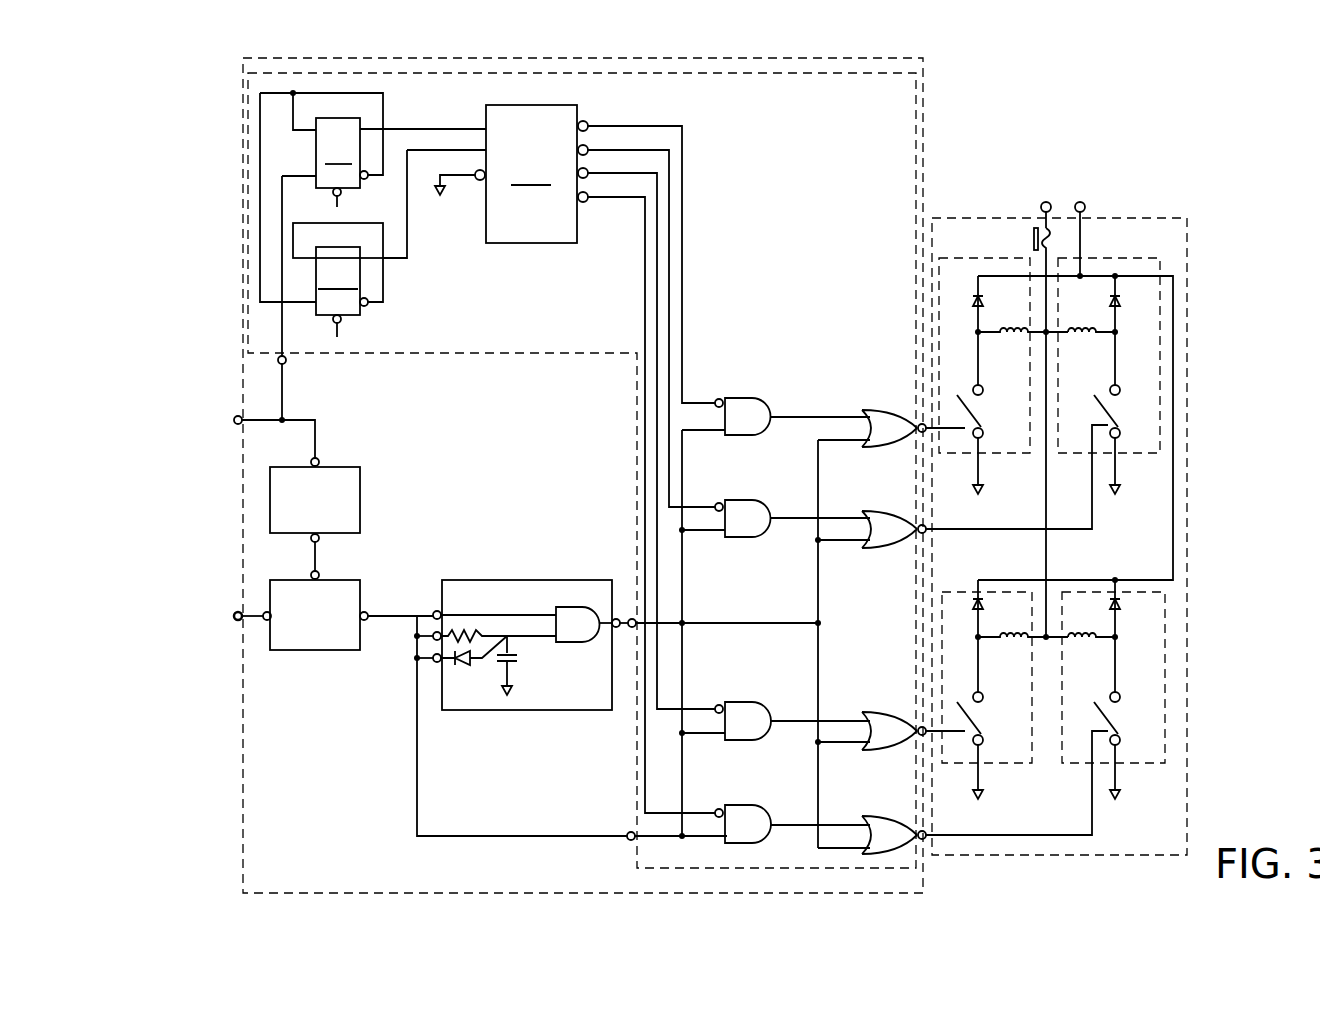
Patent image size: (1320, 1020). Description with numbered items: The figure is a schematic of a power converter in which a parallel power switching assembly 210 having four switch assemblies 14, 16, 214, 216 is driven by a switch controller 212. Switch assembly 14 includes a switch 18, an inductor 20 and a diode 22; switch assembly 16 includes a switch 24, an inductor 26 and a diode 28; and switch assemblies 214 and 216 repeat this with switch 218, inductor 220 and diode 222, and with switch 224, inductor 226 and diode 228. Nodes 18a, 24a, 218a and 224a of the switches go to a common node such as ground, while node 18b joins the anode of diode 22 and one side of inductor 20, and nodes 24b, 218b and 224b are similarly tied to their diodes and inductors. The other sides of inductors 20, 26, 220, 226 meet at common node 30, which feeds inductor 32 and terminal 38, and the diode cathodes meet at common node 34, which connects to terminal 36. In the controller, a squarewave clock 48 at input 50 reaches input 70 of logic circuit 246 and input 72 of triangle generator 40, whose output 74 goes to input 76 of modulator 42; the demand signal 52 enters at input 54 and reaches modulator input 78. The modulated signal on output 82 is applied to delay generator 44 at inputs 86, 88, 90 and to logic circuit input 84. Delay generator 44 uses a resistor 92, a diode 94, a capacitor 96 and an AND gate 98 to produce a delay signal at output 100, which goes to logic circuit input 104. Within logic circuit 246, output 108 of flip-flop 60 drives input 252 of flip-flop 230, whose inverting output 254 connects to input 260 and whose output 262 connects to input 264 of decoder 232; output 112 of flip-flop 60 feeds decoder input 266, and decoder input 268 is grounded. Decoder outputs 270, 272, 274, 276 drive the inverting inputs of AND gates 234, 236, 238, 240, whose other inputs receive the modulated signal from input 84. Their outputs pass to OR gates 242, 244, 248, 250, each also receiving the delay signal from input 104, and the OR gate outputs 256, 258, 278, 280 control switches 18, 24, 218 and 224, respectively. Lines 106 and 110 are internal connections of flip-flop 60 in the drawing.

The switch assembly 14 is at (928, 297).
The switch assembly 16 is at (1162, 333).
The switch 18 is at (970, 411).
The node 18a is at (984, 434).
The node 18b is at (972, 388).
The inductor 20 is at (1012, 336).
The diode 22 is at (984, 301).
The switch 24 is at (1119, 418).
The node 24a is at (1120, 434).
The node 24b is at (1120, 388).
The inductor 26 is at (1078, 330).
The diode 28 is at (1120, 302).
The common node 30 is at (1049, 334).
The inductor 32 is at (1043, 230).
The common node 34 is at (1082, 274).
The terminal 36 is at (1080, 202).
The terminal 38 is at (1046, 202).
The triangle generator 40 is at (350, 480).
The modulator 42 is at (310, 634).
The delay generator 44 is at (530, 580).
The squarewave clock 48 is at (160, 408).
The input 50 is at (238, 424).
The demand signal 52 is at (177, 665).
The input 54 is at (236, 612).
The flip-flop 60 is at (338, 162).
The input 70 is at (286, 362).
The input 72 is at (316, 458).
The output 74 is at (319, 540).
The input 76 is at (319, 576).
The input 78 is at (267, 620).
The output 82 is at (366, 620).
The input 84 is at (630, 832).
The input 86 is at (437, 611).
The input 88 is at (433, 638).
The input 90 is at (437, 662).
The resistor 92 is at (470, 632).
The diode 94 is at (465, 660).
The capacitor 96 is at (518, 660).
The AND gate 98 is at (578, 608).
The output 100 is at (616, 619).
The input 104 is at (632, 627).
The counter input line 106 is at (282, 178).
The output 108 is at (367, 180).
The feedback line 110 is at (302, 132).
The output 112 is at (375, 129).
The parallel power switching assembly 210 is at (1186, 218).
The switch controller 212 is at (928, 65).
The switch assembly 214 is at (928, 632).
The switch assembly 216 is at (1165, 625).
The switch 218 is at (970, 714).
The node 218a is at (984, 741).
The node 218b is at (983, 696).
The inductor 220 is at (1012, 634).
The diode 222 is at (975, 601).
The switch 224 is at (1119, 721).
The node 224a is at (1121, 740).
The node 224b is at (1120, 695).
The inductor 226 is at (1080, 634).
The diode 228 is at (1120, 600).
The flip-flop 230 is at (338, 292).
The decoder 232 is at (531, 174).
The AND gate 234 is at (740, 405).
The AND gate 236 is at (748, 508).
The AND gate 238 is at (738, 705).
The AND gate 240 is at (748, 808).
The OR gate 242 is at (878, 410).
The OR gate 244 is at (880, 520).
The logic circuit 246 is at (917, 120).
The OR gate 248 is at (872, 715).
The OR gate 250 is at (876, 818).
The input 252 is at (282, 303).
The inverting output 254 is at (371, 306).
The output 256 is at (927, 432).
The output 258 is at (926, 529).
The input 260 is at (302, 254).
The output 262 is at (402, 259).
The input 264 is at (440, 150).
The input 266 is at (466, 128).
The input 268 is at (462, 180).
The output 270 is at (600, 126).
The output 272 is at (643, 147).
The output 274 is at (657, 184).
The output 276 is at (616, 200).
The output 278 is at (928, 738).
The output 280 is at (926, 840).